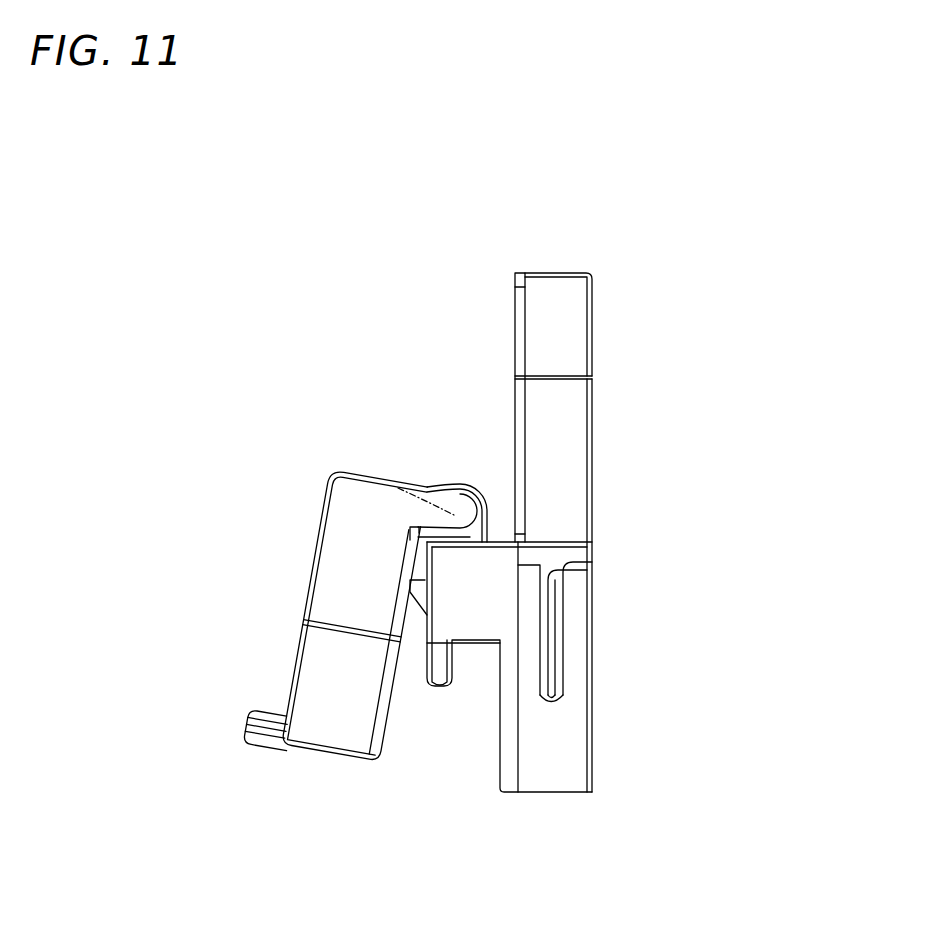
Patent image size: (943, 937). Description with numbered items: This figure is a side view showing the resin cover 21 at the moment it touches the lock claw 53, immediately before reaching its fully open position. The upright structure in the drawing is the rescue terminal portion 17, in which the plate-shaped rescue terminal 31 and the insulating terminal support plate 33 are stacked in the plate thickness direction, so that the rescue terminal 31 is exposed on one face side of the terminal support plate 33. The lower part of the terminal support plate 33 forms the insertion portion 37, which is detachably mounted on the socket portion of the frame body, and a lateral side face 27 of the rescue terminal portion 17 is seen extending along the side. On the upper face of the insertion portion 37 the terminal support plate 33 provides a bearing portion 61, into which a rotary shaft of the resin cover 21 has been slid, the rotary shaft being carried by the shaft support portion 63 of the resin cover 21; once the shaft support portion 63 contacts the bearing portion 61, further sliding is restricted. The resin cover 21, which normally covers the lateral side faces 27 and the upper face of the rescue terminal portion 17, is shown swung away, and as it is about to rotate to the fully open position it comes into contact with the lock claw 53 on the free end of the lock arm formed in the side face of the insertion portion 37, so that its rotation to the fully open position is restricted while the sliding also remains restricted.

The rescue terminal portion 17 is at (505, 251).
The resin cover 21 is at (329, 733).
The lateral side face 27 is at (566, 447).
The rescue terminal 31 is at (515, 304).
The terminal support plate 33 is at (593, 318).
The insertion portion 37 is at (473, 628).
The lock claw 53 is at (417, 588).
The bearing portion 61 is at (482, 485).
The shaft support portion 63 is at (422, 512).